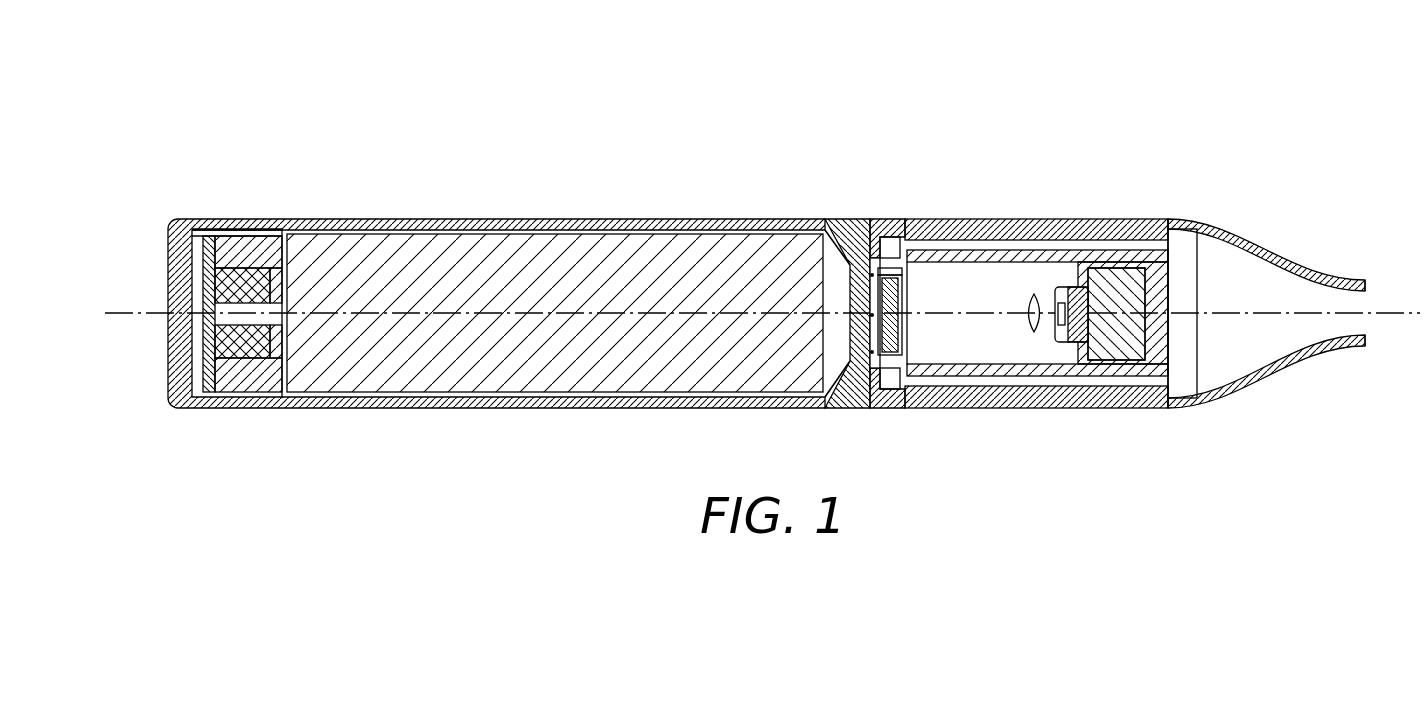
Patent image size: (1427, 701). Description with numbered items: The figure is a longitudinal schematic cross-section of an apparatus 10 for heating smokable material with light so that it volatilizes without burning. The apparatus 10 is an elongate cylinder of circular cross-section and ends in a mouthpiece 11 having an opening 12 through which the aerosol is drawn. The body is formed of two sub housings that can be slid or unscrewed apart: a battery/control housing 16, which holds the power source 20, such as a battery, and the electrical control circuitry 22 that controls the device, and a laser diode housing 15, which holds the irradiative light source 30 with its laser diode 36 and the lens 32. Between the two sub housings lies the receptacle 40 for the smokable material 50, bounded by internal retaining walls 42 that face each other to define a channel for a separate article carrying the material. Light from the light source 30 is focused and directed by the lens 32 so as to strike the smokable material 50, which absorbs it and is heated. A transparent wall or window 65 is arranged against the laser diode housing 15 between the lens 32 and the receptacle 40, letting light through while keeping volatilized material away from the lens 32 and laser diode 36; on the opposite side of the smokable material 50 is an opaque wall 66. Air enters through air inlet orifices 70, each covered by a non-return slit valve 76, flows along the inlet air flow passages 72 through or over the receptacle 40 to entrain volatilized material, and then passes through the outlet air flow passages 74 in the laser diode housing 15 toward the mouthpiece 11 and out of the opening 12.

The apparatus 10 is at (285, 96).
The mouthpiece 11 is at (1268, 251).
The opening 12 is at (1367, 302).
The laser diode housing 15 is at (1070, 226).
The battery/control housing 16 is at (421, 222).
The power source 20 is at (597, 247).
The electrical control circuitry 22 is at (249, 247).
The irradiative light source 30 is at (1108, 342).
The lens 32 is at (1028, 309).
The laser diode 36 is at (1068, 343).
The receptacle 40 is at (864, 333).
The internal retaining walls 42 is at (890, 396).
The smokable material 50 is at (900, 330).
The transparent wall or window 65 is at (904, 305).
The opaque wall 66 is at (902, 288).
The air inlet orifice 70 is at (833, 222).
The inlet air flow passages 72 is at (868, 240).
The outlet air flow passages 74 is at (986, 250).
The valve 76 is at (834, 222).